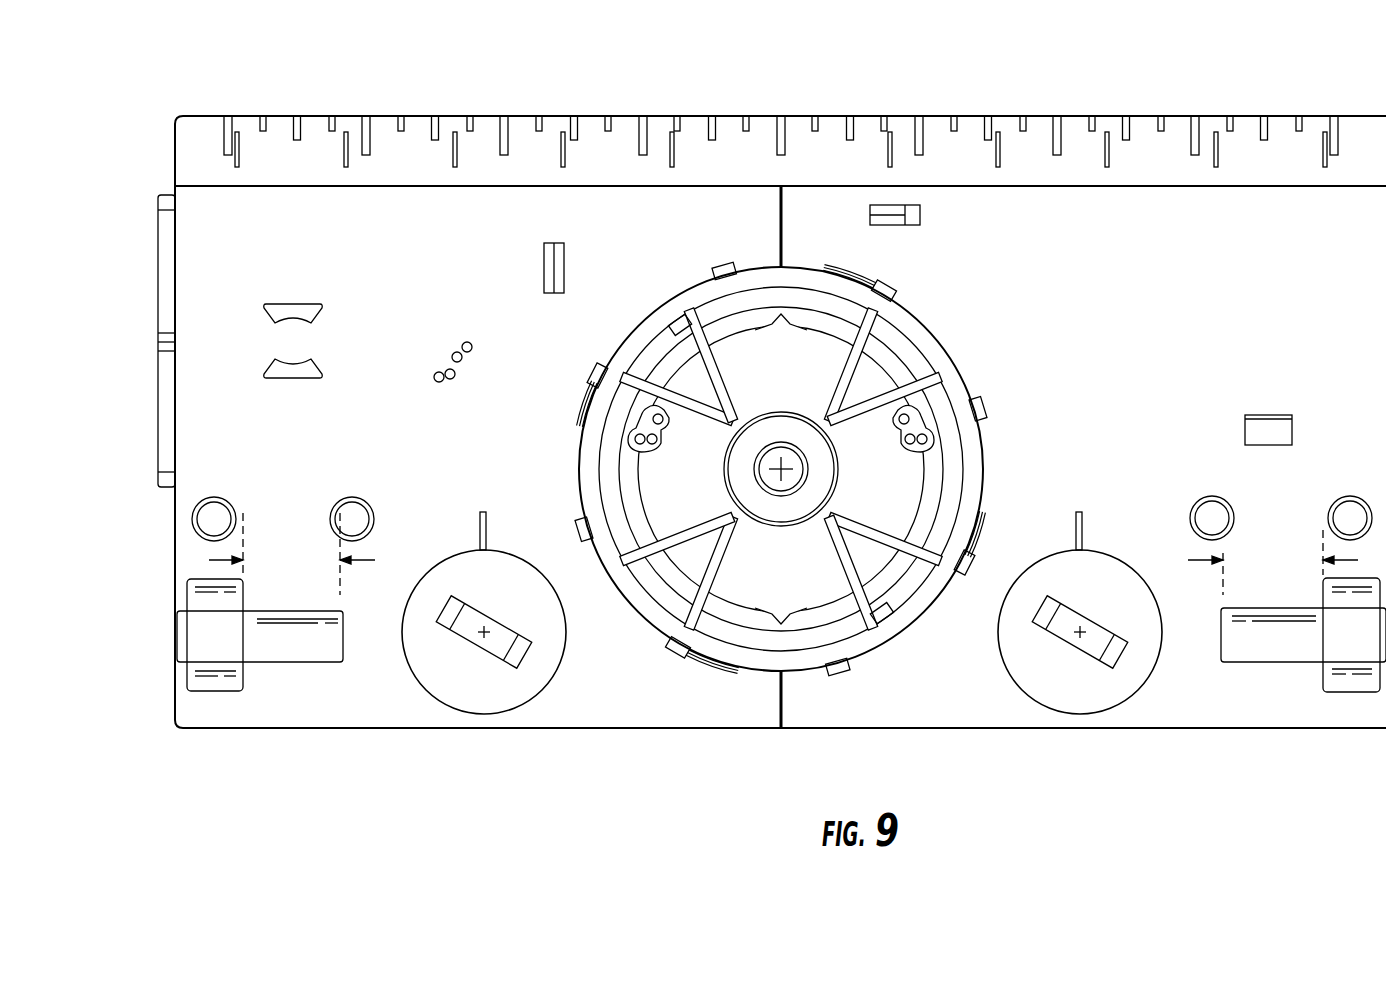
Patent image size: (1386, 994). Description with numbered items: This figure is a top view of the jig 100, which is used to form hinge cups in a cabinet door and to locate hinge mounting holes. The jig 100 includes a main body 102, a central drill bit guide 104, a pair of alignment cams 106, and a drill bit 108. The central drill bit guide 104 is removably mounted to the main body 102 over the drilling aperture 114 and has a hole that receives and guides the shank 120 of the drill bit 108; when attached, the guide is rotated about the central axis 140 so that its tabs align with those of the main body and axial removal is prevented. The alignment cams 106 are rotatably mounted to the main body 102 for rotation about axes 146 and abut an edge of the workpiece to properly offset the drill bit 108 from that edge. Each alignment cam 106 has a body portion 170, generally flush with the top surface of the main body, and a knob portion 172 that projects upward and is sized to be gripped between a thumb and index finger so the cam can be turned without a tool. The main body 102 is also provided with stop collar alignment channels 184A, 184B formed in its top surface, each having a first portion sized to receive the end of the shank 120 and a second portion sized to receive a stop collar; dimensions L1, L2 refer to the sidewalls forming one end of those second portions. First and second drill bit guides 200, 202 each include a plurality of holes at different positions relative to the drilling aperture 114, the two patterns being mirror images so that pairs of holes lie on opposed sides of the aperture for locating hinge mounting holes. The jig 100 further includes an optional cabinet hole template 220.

The jig 100 is at (891, 78).
The main body 102 is at (1075, 137).
The central drill bit guide 104 is at (668, 360).
The drill bit 108 is at (786, 455).
The shank 120 is at (800, 455).
The central axis 140 is at (790, 470).
The first drill bit guide 200 is at (650, 440).
The second drill bit guide 202 is at (930, 440).
The drilling aperture 114 is at (783, 590).
The body portion 170 is at (463, 568).
The axes 146 is at (480, 636).
The alignment cams 106 is at (462, 692).
The knob portion 172 is at (515, 668).
The stop collar alignment channel 184B is at (281, 672).
The stop collar alignment channel 184A is at (1273, 672).
The cabinet hole template 220 is at (165, 238).
The dimension L1 is at (1205, 562).
The dimension L2 is at (358, 562).